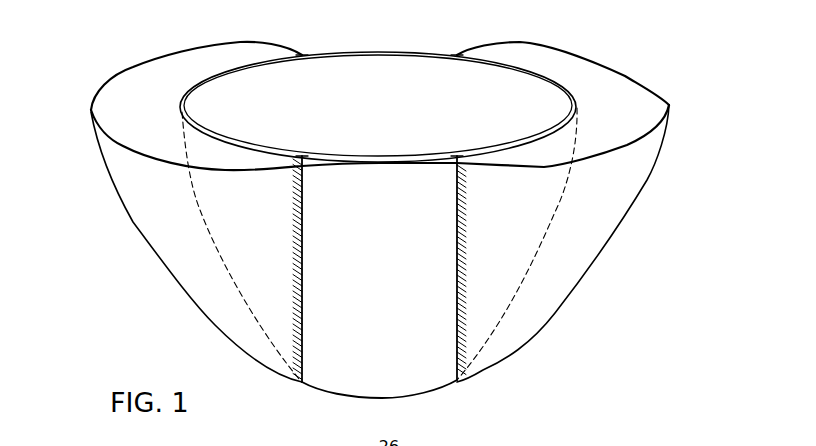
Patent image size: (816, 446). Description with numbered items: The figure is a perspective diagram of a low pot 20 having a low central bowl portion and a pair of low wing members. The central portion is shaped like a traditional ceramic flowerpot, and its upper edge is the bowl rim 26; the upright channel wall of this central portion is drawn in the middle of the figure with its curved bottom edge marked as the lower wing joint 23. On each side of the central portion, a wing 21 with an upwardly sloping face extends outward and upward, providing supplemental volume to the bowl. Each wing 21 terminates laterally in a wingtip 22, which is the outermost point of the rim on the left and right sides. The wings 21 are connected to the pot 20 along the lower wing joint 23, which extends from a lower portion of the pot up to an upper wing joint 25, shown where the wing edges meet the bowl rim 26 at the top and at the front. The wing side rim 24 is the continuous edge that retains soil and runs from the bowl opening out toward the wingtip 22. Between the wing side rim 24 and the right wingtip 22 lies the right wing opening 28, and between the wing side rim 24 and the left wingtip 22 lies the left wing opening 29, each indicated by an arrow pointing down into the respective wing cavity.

The pot 20 is at (695, 170).
The wing with face 21 is at (133, 223).
The wingtip 22 is at (90, 108).
The lower wing joint 23 is at (440, 384).
The wing side rim 24 is at (217, 72).
The wing upper joint 25 is at (300, 53).
The bowl rim 26 is at (380, 50).
The right wing opening 28 is at (632, 88).
The left wing opening 29 is at (120, 96).